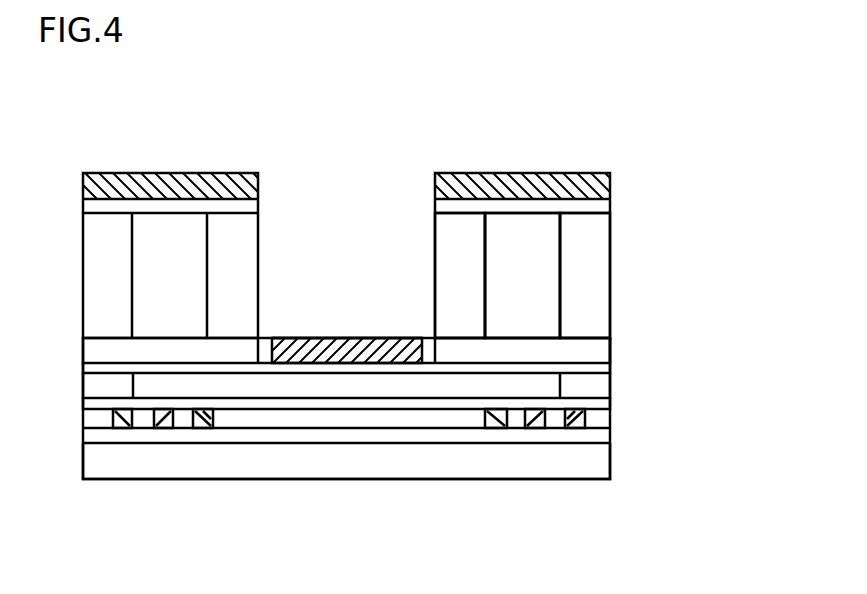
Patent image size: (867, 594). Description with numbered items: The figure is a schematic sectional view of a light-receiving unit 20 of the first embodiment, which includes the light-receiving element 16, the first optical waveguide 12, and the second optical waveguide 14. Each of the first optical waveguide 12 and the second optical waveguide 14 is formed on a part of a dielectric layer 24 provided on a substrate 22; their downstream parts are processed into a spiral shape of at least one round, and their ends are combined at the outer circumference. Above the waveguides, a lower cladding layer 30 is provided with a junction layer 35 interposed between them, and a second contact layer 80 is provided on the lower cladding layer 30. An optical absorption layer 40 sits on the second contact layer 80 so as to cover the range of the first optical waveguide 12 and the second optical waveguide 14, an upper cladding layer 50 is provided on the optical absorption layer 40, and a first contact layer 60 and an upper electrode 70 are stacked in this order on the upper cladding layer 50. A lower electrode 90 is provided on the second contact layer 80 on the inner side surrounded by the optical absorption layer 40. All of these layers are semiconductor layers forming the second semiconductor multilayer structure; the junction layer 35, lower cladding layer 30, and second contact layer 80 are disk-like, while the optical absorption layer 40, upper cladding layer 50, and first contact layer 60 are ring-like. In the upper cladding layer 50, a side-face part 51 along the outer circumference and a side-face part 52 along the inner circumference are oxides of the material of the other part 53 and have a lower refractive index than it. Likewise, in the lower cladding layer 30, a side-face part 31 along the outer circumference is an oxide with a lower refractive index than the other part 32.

The light-receiving unit 20 is at (368, 150).
The light-receiving element 16 is at (634, 158).
The upper electrode 70 is at (603, 181).
The first contact layer 60 is at (603, 207).
The upper cladding layer 50 is at (600, 275).
The side-face part 52 is at (460, 268).
The other part 53 is at (540, 293).
The side-face part 51 is at (603, 316).
The optical absorption layer 40 is at (610, 352).
The lower cladding layer 30 is at (421, 375).
The other part 32 is at (545, 388).
The side-face part 31 is at (610, 390).
The junction layer 35 is at (610, 401).
The dielectric layer 24 is at (610, 429).
The substrate 22 is at (610, 463).
The first optical waveguide 12 is at (160, 430).
The second optical waveguide 14 is at (122, 430).
The second contact layer 80 is at (383, 352).
The lower electrode 90 is at (327, 338).